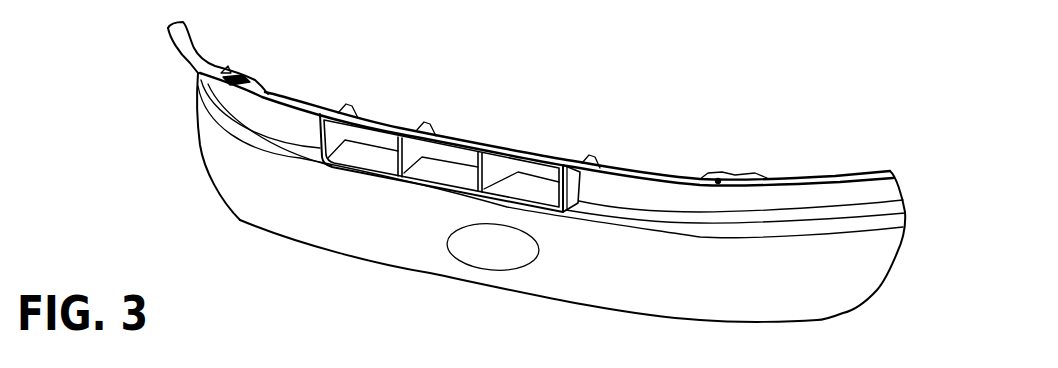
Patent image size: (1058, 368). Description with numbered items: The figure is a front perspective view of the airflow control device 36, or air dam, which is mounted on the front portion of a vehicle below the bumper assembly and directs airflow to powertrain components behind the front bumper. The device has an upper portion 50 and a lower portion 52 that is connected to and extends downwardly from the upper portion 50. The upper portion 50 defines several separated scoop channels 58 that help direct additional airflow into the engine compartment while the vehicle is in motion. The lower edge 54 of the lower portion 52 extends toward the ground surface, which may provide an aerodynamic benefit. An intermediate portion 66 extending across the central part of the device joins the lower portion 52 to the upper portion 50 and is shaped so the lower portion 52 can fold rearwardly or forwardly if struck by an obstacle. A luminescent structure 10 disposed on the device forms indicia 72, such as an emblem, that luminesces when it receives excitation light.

The luminescent structure 10 is at (490, 272).
The airflow control device 36 is at (230, 214).
The upper portion 50 is at (627, 194).
The lower portion 52 is at (558, 264).
The lower edge 54 is at (288, 243).
The scoop channels 58 is at (377, 152).
The intermediate portion 66 is at (792, 218).
The indicia 72 is at (464, 258).